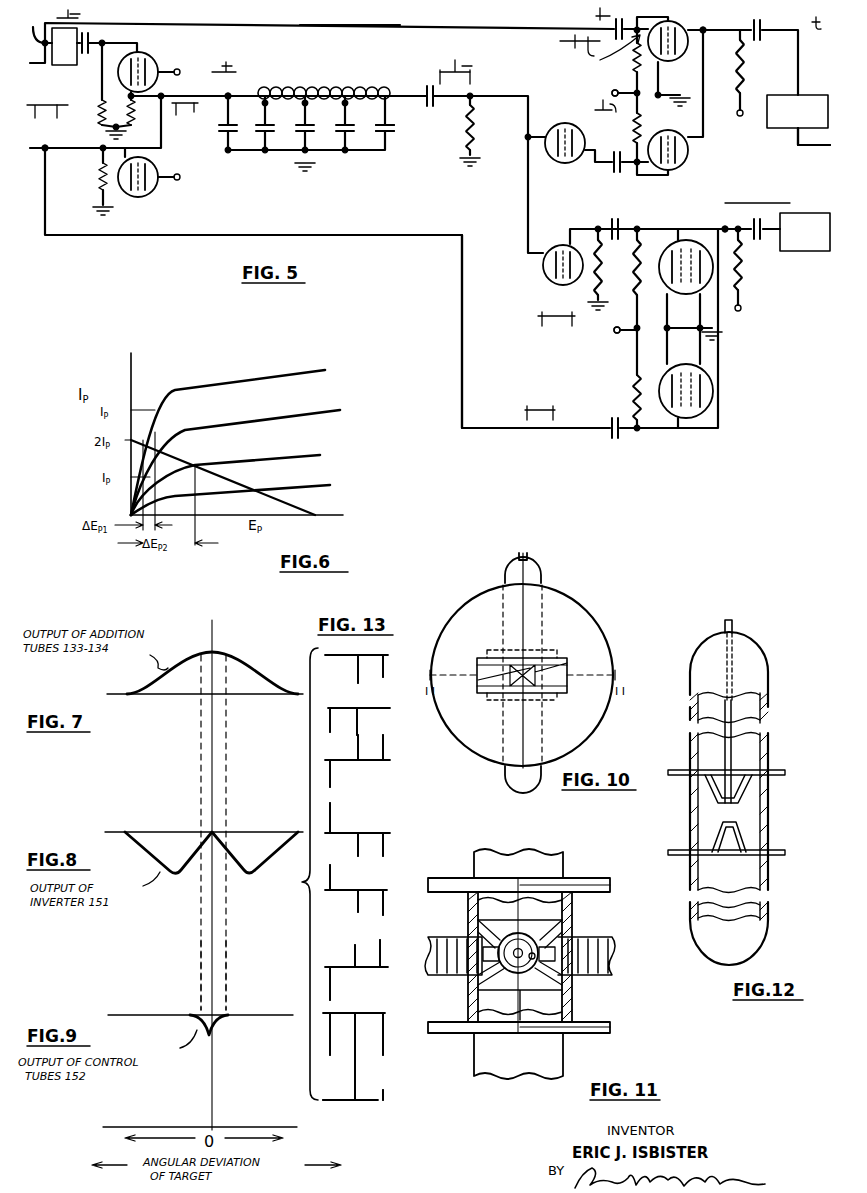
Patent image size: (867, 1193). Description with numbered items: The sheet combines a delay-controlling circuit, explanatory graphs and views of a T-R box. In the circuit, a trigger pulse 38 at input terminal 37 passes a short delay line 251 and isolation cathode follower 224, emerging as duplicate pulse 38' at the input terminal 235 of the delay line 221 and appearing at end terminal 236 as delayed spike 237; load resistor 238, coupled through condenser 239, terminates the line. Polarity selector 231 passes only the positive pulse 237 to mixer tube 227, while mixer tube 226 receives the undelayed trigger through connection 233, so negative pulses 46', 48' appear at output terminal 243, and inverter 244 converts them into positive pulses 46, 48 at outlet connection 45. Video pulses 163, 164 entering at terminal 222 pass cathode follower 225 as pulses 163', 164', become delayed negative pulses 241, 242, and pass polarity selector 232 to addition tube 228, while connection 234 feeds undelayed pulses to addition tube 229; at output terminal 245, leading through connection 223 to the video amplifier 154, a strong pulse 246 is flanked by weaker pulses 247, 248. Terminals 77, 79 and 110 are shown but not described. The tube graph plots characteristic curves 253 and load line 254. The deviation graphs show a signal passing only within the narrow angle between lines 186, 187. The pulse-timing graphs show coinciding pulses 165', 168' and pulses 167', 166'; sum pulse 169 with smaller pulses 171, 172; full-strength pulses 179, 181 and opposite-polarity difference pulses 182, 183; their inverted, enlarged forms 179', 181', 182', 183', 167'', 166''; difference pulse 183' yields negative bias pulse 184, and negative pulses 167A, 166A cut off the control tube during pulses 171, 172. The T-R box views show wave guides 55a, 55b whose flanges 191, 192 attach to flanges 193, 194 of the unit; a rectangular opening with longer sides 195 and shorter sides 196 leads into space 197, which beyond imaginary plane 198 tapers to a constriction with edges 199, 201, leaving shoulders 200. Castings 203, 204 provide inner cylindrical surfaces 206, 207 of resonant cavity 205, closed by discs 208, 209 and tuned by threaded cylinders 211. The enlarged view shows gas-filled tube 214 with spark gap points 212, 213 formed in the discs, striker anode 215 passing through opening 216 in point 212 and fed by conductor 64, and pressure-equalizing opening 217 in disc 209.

In FIG. 5, the trigger input terminal 37 is at (37, 23).
In FIG. 5, the trigger pulse 38 is at (339, 21).
In FIG. 5, the connection 233 is at (353, 22).
In FIG. 5, the negative trigger pulse 46' is at (561, 48).
In FIG. 5, the negative trigger pulse 48' is at (607, 56).
In FIG. 5, the output terminal 243 is at (703, 25).
In FIG. 5, the positive pulse 46 is at (774, 24).
In FIG. 5, the positive pulse 48 is at (812, 32).
In FIG. 5, the cathode follower isolation tube 224 is at (146, 52).
In FIG. 5, the terminal 79 is at (177, 68).
In FIG. 5, the duplicate trigger pulse 38' is at (225, 53).
In FIG. 5, the left-hand input terminal 235 is at (228, 94).
In FIG. 5, the delay line 221 is at (322, 88).
In FIG. 5, the end terminal 236 is at (387, 103).
In FIG. 5, the delayed spike 237 is at (460, 70).
In FIG. 5, the delayed negative pulse 241 is at (440, 78).
In FIG. 5, the delayed negative pulse 242 is at (470, 78).
In FIG. 5, the coupling condenser 239 is at (430, 110).
In FIG. 5, the load resistor 238 is at (475, 120).
In FIG. 5, the polarity selector 231 is at (562, 130).
In FIG. 5, the transmitter trigger mixer tube 226 is at (676, 64).
In FIG. 5, the terminal 77 is at (617, 91).
In FIG. 5, the transmitter trigger mixer tube 227 is at (694, 152).
In FIG. 5, the inverter 244 is at (785, 95).
In FIG. 5, the outlet connection 45 is at (797, 138).
In FIG. 5, the short delay line 251 is at (56, 68).
In FIG. 5, the negative video pulse 163 is at (284, 263).
In FIG. 5, the negative video pulse 164 is at (318, 263).
In FIG. 5, the video pulse 163' is at (176, 120).
In FIG. 5, the video pulse 164' is at (198, 128).
In FIG. 5, the video input terminal 222 is at (46, 150).
In FIG. 5, the cathode follower isolation tube 225 is at (141, 197).
In FIG. 5, the terminal 110 is at (181, 176).
In FIG. 5, the connection 234 is at (462, 278).
In FIG. 5, the polarity selector 232 is at (558, 244).
In FIG. 5, the coincidence selector addition tube 228 is at (690, 240).
In FIG. 5, the output terminal 245 is at (722, 220).
In FIG. 5, the output connection 223 is at (743, 247).
In FIG. 5, the video amplifier 154 is at (805, 252).
In FIG. 5, the weaker flanking pulse 247 is at (735, 203).
In FIG. 5, the strong sum pulse 246 is at (762, 203).
In FIG. 5, the weaker flanking pulse 248 is at (785, 198).
In FIG. 5, the coincidence selector addition tube 229 is at (690, 420).
In FIG. 6, the characteristic curves 253 is at (325, 370).
In FIG. 6, the load curve 254 is at (175, 460).
In FIG. 9, the angle limit line 186 is at (199, 955).
In FIG. 9, the angle limit line 187 is at (226, 955).
In FIG. 13, the inverted pulse 165' is at (338, 670).
In FIG. 13, the inverted pulse 166' is at (403, 750).
In FIG. 13, the inverted pulse 167' is at (350, 738).
In FIG. 13, the inverted pulse 168' is at (377, 721).
In FIG. 13, the difference pulse 182 is at (344, 747).
In FIG. 13, the full-strength pulse 181 is at (402, 747).
In FIG. 13, the full-strength pulse 179 is at (352, 818).
In FIG. 13, the difference pulse 183 is at (338, 844).
In FIG. 13, the inverted amplified pulse 167'' is at (352, 877).
In FIG. 13, the inverted amplified pulse 181' is at (395, 892).
In FIG. 13, the inverted amplified pulse 182' is at (342, 905).
In FIG. 13, the inverted amplified pulse 166'' is at (356, 948).
In FIG. 13, the difference pulse 183' is at (335, 954).
In FIG. 13, the inverted amplified pulse 179' is at (355, 983).
In FIG. 13, the negative bias pulse 184 is at (357, 1022).
In FIG. 13, the negative bias pulse 166A is at (385, 1052).
In FIG. 13, the negative bias pulse 167A is at (332, 1060).
In FIG. 13, the sum pulse 169 is at (357, 1080).
In FIG. 13, the smaller pulse 171 is at (335, 1098).
In FIG. 13, the smaller pulse 172 is at (385, 1097).
In FIG. 10, the flange 193 is at (587, 736).
In FIG. 11, the flange 193 is at (605, 1024).
In FIG. 10, the partly evacuated tube 214 is at (536, 572).
In FIG. 11, the partly evacuated tube 214 is at (470, 903).
In FIG. 12, the partly evacuated tube 214 is at (713, 648).
In FIG. 10, the shoulders 200 is at (486, 655).
In FIG. 10, the formed disc 208 is at (548, 658).
In FIG. 12, the formed disc 208 is at (780, 770).
In FIG. 10, the formed disc 209 is at (548, 696).
In FIG. 12, the formed disc 209 is at (682, 855).
In FIG. 10, the shorter sides 196 is at (477, 668).
In FIG. 10, the constriction edge 201 is at (567, 667).
In FIG. 11, the constriction edge 201 is at (528, 975).
In FIG. 10, the constriction edge 199 is at (477, 676).
In FIG. 11, the constriction edge 199 is at (518, 975).
In FIG. 10, the longer sides 195 is at (477, 690).
In FIG. 11, the hollow pipe wave guide 55b is at (563, 858).
In FIG. 11, the hollow pipe wave guide 55a is at (478, 1060).
In FIG. 11, the flange 192 is at (588, 880).
In FIG. 11, the flange 194 is at (603, 893).
In FIG. 11, the flange 191 is at (590, 1034).
In FIG. 11, the striker anode 215 is at (516, 950).
In FIG. 12, the striker anode 215 is at (725, 745).
In FIG. 11, the opening 216 is at (519, 950).
In FIG. 12, the opening 216 is at (722, 808).
In FIG. 11, the cylindrical cavity 205 is at (483, 950).
In FIG. 11, the opening 217 is at (555, 950).
In FIG. 12, the opening 217 is at (762, 855).
In FIG. 11, the threaded cylinders 211 is at (430, 945).
In FIG. 11, the inner cylindrical surface 206 is at (495, 982).
In FIG. 11, the inner cylindrical surface 207 is at (545, 982).
In FIG. 11, the casting part 203 is at (478, 992).
In FIG. 11, the casting part 204 is at (562, 992).
In FIG. 11, the space 197 is at (478, 1003).
In FIG. 11, the imaginary plane 198 is at (562, 1005).
In FIG. 12, the conductor 64 is at (733, 630).
In FIG. 12, the spark gap point 212 is at (708, 792).
In FIG. 12, the spark gap point 213 is at (745, 832).